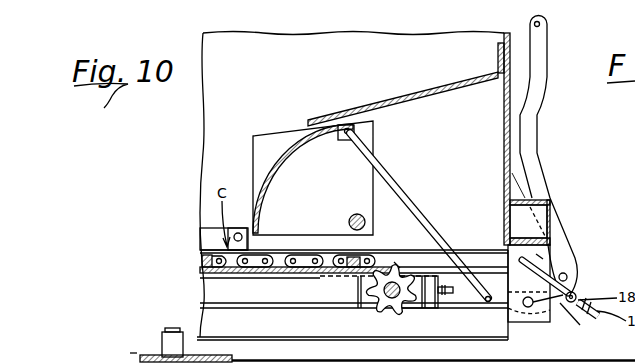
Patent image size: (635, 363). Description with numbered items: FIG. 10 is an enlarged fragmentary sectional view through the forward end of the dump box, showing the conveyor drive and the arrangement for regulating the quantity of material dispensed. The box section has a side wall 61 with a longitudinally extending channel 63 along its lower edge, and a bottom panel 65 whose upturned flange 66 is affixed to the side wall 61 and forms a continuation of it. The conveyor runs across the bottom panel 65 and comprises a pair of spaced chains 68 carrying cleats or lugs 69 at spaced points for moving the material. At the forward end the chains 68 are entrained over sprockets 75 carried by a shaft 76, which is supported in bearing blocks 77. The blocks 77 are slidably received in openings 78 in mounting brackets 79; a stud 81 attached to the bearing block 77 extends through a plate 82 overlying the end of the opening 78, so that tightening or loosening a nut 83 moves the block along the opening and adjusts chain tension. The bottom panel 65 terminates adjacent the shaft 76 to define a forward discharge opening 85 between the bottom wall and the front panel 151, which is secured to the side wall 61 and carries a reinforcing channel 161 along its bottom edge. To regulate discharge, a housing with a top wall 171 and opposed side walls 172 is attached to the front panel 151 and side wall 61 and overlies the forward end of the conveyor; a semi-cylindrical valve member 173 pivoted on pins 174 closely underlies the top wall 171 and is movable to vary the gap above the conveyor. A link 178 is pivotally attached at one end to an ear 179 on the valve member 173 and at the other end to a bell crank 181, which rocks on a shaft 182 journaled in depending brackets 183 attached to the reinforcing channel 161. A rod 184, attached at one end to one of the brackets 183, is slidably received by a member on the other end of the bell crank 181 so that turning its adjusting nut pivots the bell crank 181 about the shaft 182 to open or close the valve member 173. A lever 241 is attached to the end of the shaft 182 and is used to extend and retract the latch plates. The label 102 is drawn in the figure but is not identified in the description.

The side wall 61 is at (213, 135).
The front panel 151 is at (510, 103).
The top wall 171 is at (400, 101).
The side walls 172 is at (272, 143).
The semi-cylindrical valve member 173 is at (290, 151).
The pins 174 is at (352, 217).
The ear 179 is at (354, 131).
The link 178 is at (400, 198).
The lever 241 is at (517, 133).
The reinforcing channel 161 is at (552, 203).
The channel 63 is at (490, 322).
The rod 184 is at (550, 272).
The depending brackets 183 is at (538, 257).
The shaft 182 is at (572, 291).
The bell crank 181 is at (557, 304).
The stop block 102 is at (210, 232).
The upturned flange 66 is at (472, 253).
The bottom panel 65 is at (202, 270).
The chains 68 is at (245, 264).
The cleats or lugs 69 is at (341, 258).
The forward discharge opening 85 is at (397, 267).
The mounting brackets 79 is at (273, 292).
The openings 78 is at (362, 290).
The bearing blocks 77 is at (372, 300).
The sprockets 75 is at (407, 277).
The nut 83 is at (447, 277).
The plate 82 is at (440, 304).
The stud 81 is at (448, 294).
The shaft 76 is at (393, 300).